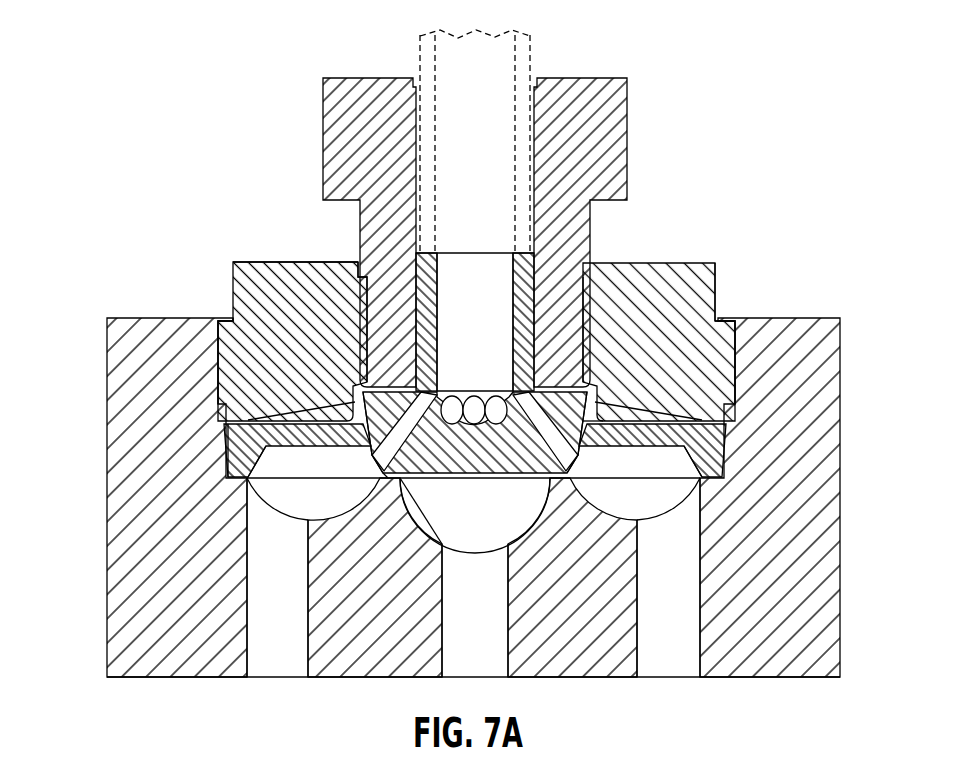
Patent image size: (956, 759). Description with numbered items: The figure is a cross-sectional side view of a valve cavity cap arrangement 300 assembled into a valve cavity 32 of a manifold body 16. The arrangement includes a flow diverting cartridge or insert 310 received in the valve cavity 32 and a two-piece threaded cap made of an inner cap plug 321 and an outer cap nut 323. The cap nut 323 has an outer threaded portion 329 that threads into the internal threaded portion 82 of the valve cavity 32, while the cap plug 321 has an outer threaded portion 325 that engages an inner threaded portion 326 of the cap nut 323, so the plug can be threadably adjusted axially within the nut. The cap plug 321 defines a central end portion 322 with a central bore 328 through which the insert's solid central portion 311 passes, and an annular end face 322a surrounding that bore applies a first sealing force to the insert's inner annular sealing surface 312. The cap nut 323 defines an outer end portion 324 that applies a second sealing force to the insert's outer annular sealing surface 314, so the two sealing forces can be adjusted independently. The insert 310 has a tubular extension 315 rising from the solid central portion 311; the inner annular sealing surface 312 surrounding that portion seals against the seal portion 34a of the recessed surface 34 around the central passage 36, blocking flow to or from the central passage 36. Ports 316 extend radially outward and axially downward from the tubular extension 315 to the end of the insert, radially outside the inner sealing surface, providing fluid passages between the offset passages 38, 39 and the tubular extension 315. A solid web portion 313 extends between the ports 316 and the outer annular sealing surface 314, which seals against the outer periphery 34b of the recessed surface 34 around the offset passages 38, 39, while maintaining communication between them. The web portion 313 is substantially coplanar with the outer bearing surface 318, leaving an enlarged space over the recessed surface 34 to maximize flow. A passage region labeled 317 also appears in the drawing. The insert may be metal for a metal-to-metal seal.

The valve cavity cap arrangement 300 is at (668, 228).
The manifold body 16 is at (812, 535).
The inner cap plug 321 is at (627, 108).
The central bore 328 is at (418, 303).
The valve cavity 32 is at (319, 455).
The ports 316 is at (348, 402).
The central end portion 322 is at (385, 355).
The internal threaded portion 82 is at (228, 372).
The outer end portion 324 is at (242, 422).
The solid web portion 313 is at (262, 450).
The outer annular sealing surface 314 is at (258, 460).
The inner annular sealing surface 312 is at (393, 482).
The solid central portion 311 is at (433, 482).
The offset passage 39 is at (247, 630).
The central passage 36 is at (505, 637).
The offset passage 38 is at (698, 630).
The tubular extension 315 is at (535, 251).
The passage 317 is at (550, 392).
The outer threaded portion 325 is at (598, 305).
The outer cap nut 323 is at (694, 307).
The inner threaded portion 326 is at (574, 355).
The outer threaded portion 329 is at (729, 354).
The annular end face 322a is at (700, 408).
The recessed surface 34 is at (575, 375).
The outer bearing surface 318 is at (672, 448).
The outer periphery 34b is at (722, 468).
The seal portion 34a is at (630, 375).
The flow diverting insert 310 is at (523, 490).